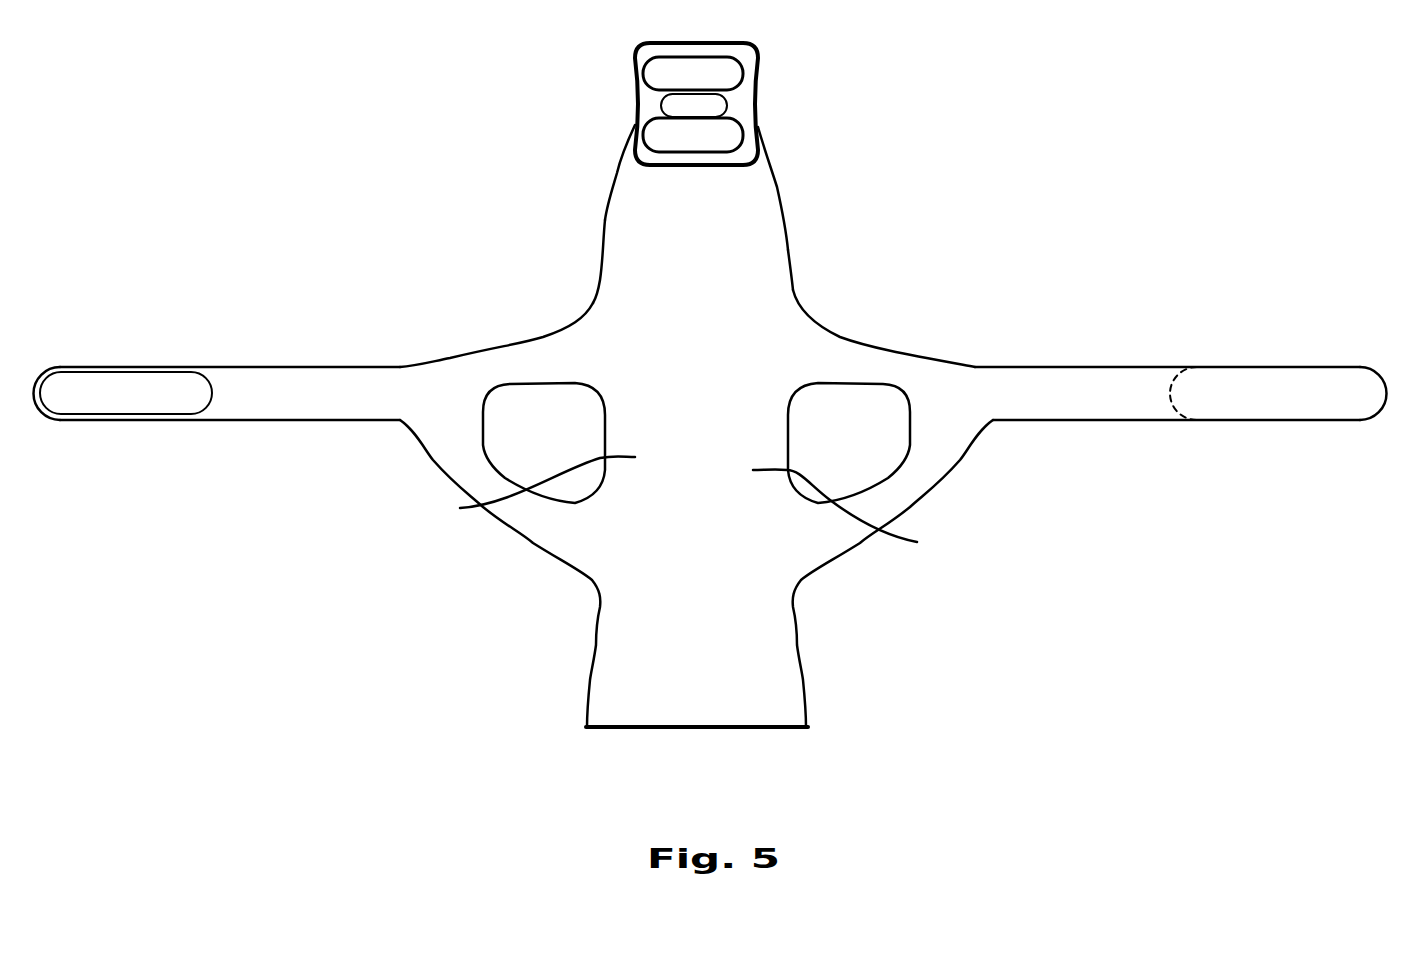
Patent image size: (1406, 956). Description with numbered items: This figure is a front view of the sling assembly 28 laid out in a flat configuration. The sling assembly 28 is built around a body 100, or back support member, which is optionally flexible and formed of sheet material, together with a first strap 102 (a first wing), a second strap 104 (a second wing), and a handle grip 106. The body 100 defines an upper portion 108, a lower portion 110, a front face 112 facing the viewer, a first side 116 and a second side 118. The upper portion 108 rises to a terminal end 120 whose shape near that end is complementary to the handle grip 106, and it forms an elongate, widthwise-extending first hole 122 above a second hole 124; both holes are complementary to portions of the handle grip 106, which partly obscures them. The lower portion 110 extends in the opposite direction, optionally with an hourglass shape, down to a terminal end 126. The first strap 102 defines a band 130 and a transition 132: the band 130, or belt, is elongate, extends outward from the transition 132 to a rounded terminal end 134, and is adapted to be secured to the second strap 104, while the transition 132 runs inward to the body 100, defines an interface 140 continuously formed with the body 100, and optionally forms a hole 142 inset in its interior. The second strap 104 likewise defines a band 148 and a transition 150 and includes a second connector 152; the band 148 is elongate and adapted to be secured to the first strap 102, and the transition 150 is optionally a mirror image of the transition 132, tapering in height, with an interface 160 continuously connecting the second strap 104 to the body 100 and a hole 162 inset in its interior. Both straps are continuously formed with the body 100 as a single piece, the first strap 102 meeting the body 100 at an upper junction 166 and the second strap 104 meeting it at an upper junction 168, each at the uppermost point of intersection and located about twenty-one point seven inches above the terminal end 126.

The sling assembly 28 is at (845, 137).
The body 100 is at (784, 220).
The first strap 102 is at (1058, 358).
The second strap 104 is at (325, 357).
The handle grip 106 is at (684, 82).
The upper portion 108 is at (607, 150).
The lower portion 110 is at (648, 332).
The front face 112 is at (722, 250).
The first side 116 is at (592, 643).
The second side 118 is at (802, 642).
The terminal end 120 is at (702, 42).
The first hole 122 is at (668, 74).
The second hole 124 is at (668, 135).
The terminal end 126 is at (727, 732).
The band 130 is at (1137, 422).
The transition 132 is at (877, 337).
The terminal end 134 is at (1358, 398).
The interface 140 is at (858, 513).
The hole 142 is at (872, 434).
The band 148 is at (298, 423).
The transition 150 is at (483, 347).
The second connector 152 is at (102, 396).
The interface 160 is at (524, 492).
The hole 162 is at (518, 441).
The upper junction 166 is at (780, 277).
The upper junction 168 is at (607, 272).